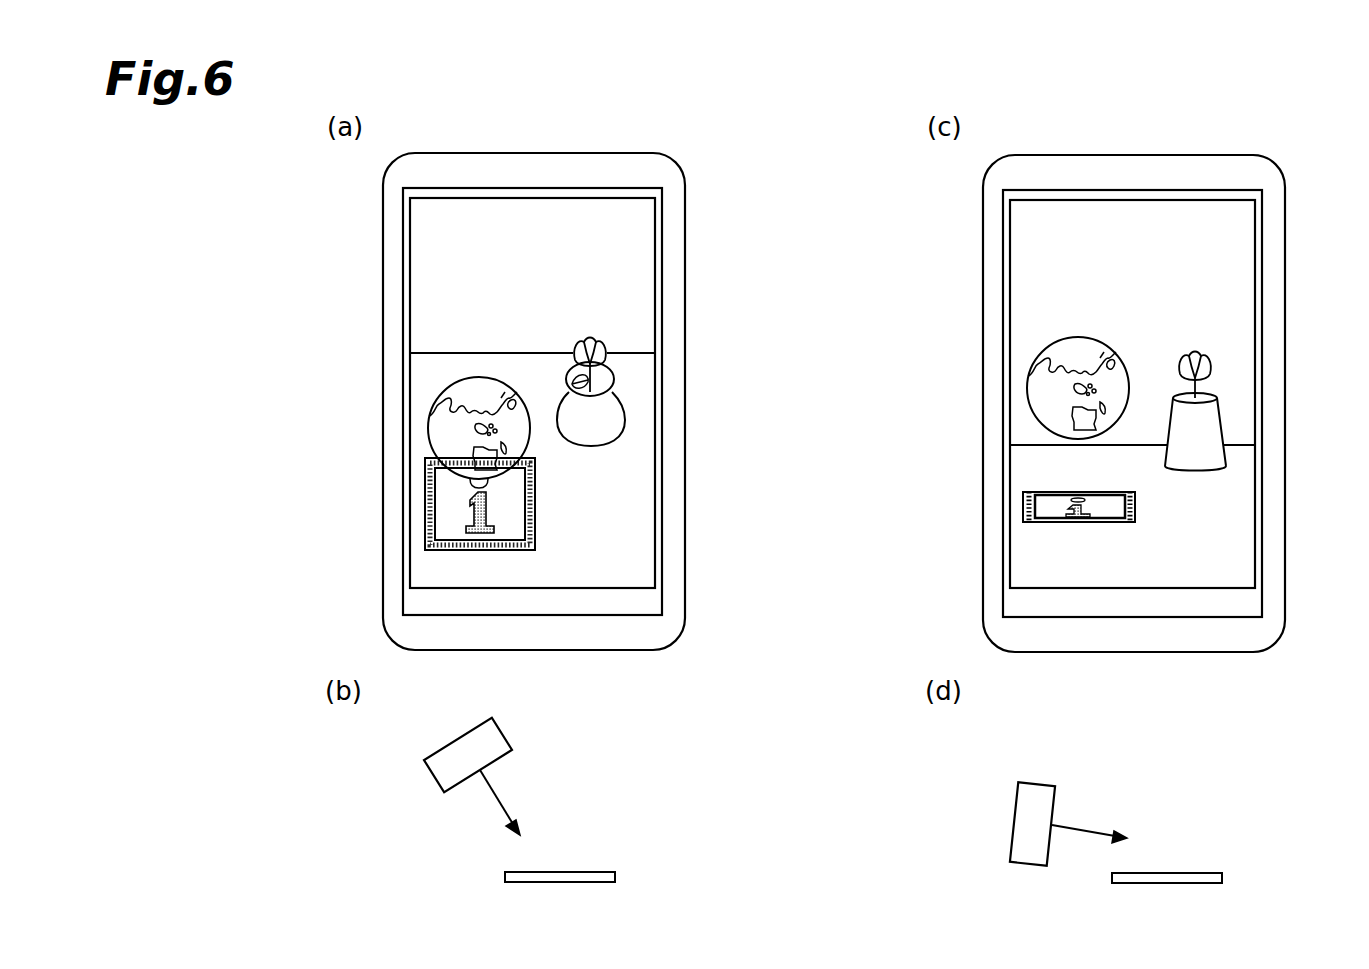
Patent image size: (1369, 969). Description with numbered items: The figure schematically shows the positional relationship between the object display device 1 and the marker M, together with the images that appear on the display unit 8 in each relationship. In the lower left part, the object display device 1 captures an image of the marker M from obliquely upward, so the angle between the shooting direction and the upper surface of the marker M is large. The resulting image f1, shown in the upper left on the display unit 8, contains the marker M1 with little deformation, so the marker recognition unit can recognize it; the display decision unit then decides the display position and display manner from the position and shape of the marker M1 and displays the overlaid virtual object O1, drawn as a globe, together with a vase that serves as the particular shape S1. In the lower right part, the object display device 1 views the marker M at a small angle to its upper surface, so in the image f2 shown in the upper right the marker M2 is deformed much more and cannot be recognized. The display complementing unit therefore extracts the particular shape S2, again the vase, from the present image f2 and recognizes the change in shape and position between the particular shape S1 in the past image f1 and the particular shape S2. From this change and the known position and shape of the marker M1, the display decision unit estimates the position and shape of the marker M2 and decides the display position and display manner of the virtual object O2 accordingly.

The display unit 8 is at (620, 153).
The image f1 is at (638, 197).
The image f2 is at (1235, 197).
The virtual object O1 is at (460, 385).
The virtual object O2 is at (1045, 388).
The marker M1 is at (450, 502).
The marker M2 is at (1045, 512).
The particular shape S1 is at (615, 407).
The particular shape S2 is at (1213, 418).
The object display device 1 is at (435, 777).
The marker M is at (585, 872).